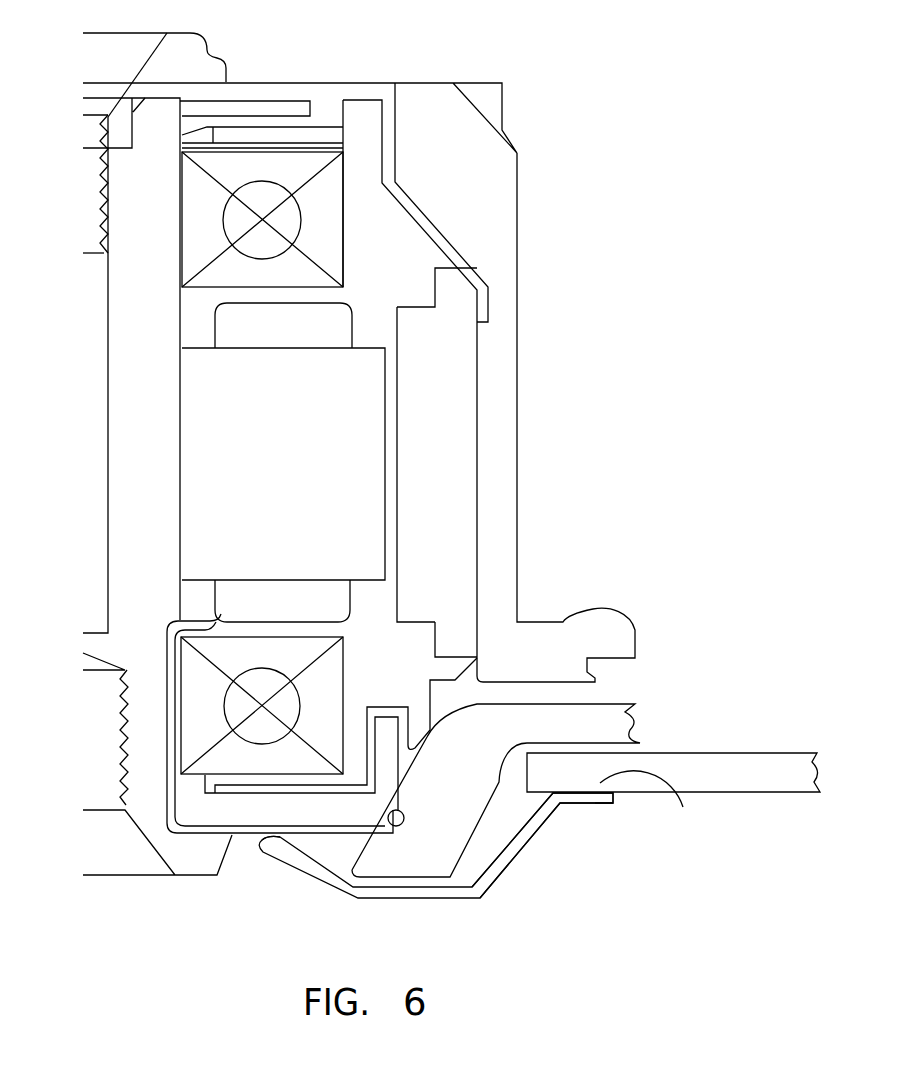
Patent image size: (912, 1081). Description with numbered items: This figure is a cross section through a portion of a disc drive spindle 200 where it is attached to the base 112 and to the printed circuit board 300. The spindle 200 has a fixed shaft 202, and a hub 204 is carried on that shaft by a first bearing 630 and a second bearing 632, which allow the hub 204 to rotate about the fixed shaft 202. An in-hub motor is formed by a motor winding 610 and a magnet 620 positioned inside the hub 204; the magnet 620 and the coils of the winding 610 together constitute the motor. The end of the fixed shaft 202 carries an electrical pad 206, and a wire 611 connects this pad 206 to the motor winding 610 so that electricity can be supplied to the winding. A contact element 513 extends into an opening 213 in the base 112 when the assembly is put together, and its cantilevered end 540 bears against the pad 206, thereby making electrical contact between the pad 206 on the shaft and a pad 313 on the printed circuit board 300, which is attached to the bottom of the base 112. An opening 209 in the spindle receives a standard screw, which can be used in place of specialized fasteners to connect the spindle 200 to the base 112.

The spindle 200 is at (503, 118).
The hub 204 is at (502, 337).
The electrical pad 206 is at (277, 835).
The fixed shaft 202 is at (195, 817).
The opening 209 is at (122, 748).
The first bearing 630 is at (331, 196).
The second bearing 632 is at (345, 660).
The motor winding 610 is at (348, 503).
The magnet 620 is at (418, 323).
The wire 611 is at (167, 716).
The base 112 is at (610, 718).
The printed circuit board 300 is at (791, 767).
The pad 313 is at (655, 810).
The opening 213 is at (350, 853).
The contact element 513 is at (517, 850).
The cantilevered end 540 is at (268, 826).